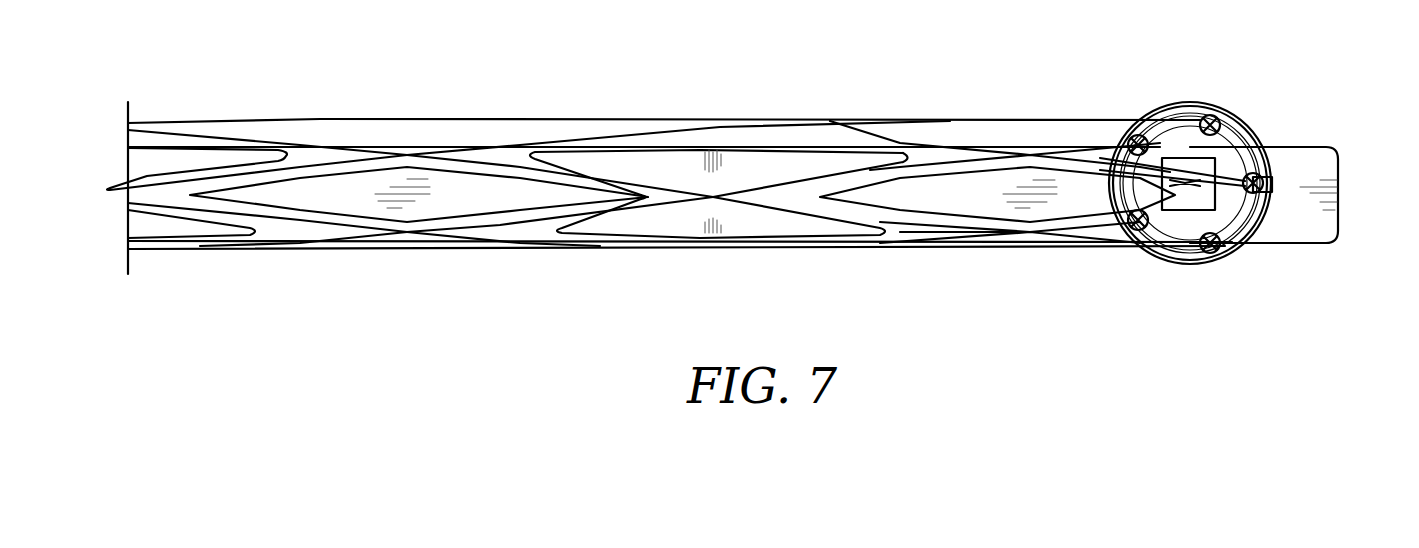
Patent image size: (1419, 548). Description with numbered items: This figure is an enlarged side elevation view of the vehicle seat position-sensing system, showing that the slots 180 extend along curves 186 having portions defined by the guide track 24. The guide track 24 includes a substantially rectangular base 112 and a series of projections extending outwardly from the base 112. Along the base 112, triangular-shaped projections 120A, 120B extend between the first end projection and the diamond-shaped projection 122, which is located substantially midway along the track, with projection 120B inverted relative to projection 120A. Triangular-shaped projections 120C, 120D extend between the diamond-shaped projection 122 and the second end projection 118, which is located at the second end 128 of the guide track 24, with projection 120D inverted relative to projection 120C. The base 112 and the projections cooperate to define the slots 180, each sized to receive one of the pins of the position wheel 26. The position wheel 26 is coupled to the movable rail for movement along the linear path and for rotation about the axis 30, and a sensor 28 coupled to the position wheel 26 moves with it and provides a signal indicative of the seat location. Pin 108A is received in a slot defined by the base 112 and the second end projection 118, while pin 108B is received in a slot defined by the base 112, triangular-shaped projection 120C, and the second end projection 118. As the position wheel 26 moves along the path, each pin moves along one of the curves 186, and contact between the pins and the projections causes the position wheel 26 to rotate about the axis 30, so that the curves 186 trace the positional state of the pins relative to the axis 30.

The guide track 24 is at (745, 128).
The position wheel 26 is at (1249, 104).
The sensor 28 is at (1184, 202).
The axis 30 is at (1192, 181).
The pin 108A is at (1264, 166).
The pin 108B is at (1136, 209).
The base 112 is at (280, 234).
The second end projection 118 is at (947, 192).
The triangular-shaped projection 120A is at (175, 156).
The triangular-shaped projection 120B is at (190, 226).
The triangular-shaped projection 120C is at (622, 158).
The triangular-shaped projection 120D is at (636, 228).
The diamond-shaped projection 122 is at (346, 203).
The second end 128 is at (1344, 195).
The slots 180 is at (638, 197).
The curves 186 is at (416, 106).